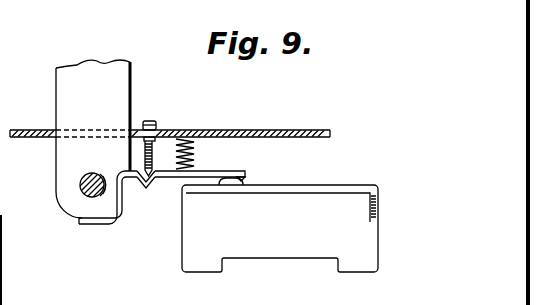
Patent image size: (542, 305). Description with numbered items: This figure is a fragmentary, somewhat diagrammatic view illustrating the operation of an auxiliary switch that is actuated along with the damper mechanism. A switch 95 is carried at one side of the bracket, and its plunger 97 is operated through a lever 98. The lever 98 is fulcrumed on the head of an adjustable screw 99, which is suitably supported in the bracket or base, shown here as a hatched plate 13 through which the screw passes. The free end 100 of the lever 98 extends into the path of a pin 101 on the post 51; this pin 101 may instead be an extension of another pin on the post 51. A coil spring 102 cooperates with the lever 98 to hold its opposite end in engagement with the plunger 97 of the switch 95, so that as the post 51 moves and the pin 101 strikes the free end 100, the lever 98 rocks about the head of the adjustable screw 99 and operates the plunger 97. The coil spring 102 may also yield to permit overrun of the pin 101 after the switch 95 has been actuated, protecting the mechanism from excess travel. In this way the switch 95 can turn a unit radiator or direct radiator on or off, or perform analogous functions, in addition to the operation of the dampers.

The base plate 13 is at (308, 130).
The post 51 is at (115, 83).
The switch 95 is at (278, 248).
The plunger 97 is at (245, 173).
The lever 98 is at (170, 178).
The adjustable screw 99 is at (154, 152).
The free end 100 is at (102, 223).
The pin 101 is at (85, 194).
The coil spring 102 is at (190, 156).